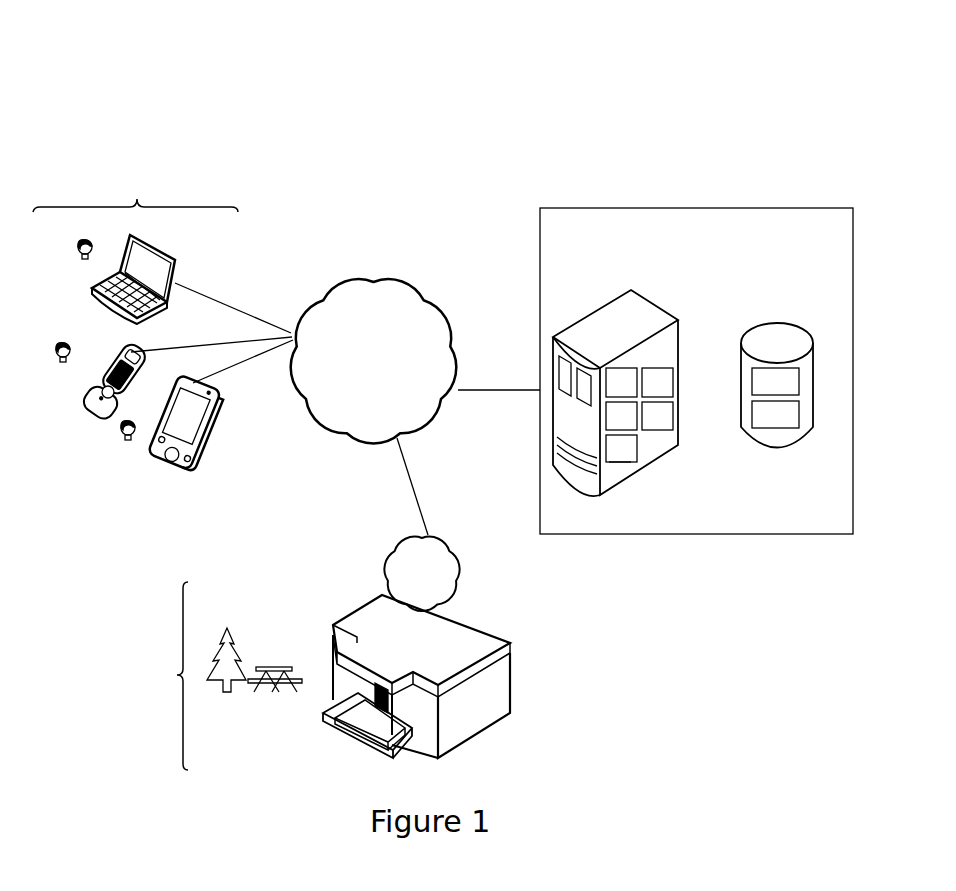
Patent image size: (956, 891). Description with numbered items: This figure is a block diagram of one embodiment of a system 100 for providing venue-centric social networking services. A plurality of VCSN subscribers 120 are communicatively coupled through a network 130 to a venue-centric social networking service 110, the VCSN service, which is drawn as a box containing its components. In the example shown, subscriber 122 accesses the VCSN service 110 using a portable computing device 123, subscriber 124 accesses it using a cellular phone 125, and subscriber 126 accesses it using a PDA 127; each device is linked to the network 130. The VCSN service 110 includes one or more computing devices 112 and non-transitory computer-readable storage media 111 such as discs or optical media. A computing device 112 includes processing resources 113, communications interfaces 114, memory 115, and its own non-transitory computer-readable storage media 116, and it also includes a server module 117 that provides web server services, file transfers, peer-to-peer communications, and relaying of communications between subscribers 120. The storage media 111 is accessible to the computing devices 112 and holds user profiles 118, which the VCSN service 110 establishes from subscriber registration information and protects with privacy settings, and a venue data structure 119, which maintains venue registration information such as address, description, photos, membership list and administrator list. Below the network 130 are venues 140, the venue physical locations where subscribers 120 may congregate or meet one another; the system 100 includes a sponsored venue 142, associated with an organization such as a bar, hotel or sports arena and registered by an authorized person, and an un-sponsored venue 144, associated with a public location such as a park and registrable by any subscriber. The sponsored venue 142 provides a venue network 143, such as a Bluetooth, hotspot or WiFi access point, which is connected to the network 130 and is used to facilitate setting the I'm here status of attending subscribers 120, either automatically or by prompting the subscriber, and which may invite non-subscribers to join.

The system 100 is at (150, 38).
The venue-centric social networking service 110 is at (696, 371).
The non-transitory computer-readable storage media 111 is at (805, 333).
The computing device 112 is at (678, 324).
The processing resources 113 is at (633, 372).
The communications interfaces 114 is at (673, 382).
The memory 115 is at (637, 437).
The non-transitory computer-readable storage media 116 is at (673, 416).
The server module 117 is at (637, 460).
The user profiles 118 is at (775, 381).
The venue data structure 119 is at (775, 414).
The VCSN subscribers 120 is at (135, 182).
The subscriber 122 is at (84, 258).
The portable computing device 123 is at (173, 258).
The subscriber 124 is at (62, 362).
The cellular phone 125 is at (136, 356).
The subscriber 126 is at (129, 437).
The PDA 127 is at (210, 390).
The network 130 is at (415, 407).
The venues 140 is at (137, 676).
The sponsored venue 142 is at (511, 662).
The venue network 143 is at (421, 574).
The un-sponsored venue 144 is at (237, 638).